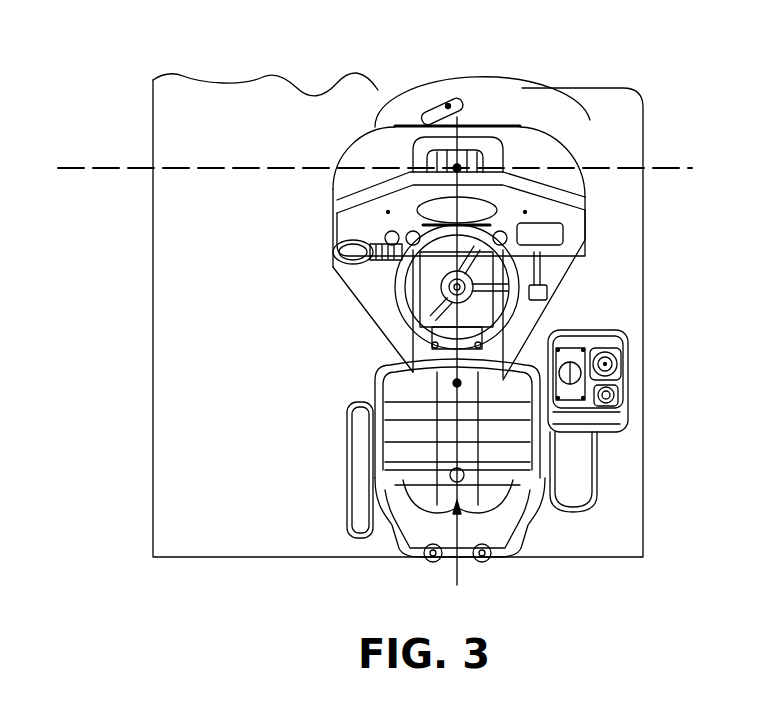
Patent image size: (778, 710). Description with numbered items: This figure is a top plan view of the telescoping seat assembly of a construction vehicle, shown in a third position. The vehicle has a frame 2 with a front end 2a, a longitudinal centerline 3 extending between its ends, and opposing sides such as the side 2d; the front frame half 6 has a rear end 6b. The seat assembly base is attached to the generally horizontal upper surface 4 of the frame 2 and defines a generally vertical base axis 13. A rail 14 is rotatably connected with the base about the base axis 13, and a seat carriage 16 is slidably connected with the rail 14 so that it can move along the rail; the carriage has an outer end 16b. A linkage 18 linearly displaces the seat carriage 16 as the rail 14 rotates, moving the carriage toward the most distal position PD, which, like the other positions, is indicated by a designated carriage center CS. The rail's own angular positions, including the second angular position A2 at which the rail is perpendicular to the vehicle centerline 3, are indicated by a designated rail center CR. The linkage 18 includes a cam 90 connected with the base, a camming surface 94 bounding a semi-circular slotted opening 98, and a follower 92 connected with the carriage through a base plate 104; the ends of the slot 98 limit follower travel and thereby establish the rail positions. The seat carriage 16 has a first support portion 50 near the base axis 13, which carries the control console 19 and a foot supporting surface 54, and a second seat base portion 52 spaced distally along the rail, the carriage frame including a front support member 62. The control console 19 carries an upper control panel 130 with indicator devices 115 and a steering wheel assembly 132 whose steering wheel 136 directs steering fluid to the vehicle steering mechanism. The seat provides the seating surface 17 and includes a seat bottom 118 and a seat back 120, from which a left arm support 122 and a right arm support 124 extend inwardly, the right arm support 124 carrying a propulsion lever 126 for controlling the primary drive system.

The frame 2 is at (128, 347).
The front end 2a is at (645, 373).
The side 2d is at (627, 557).
The longitudinal centerline 3 is at (122, 168).
The upper surface 4 is at (198, 403).
The front frame half 6 is at (180, 468).
The rear end 6b is at (153, 276).
The base axis 13 is at (500, 145).
The rail 14 is at (520, 126).
The seat carriage 16 is at (394, 341).
The outer end 16b is at (503, 552).
The seating surface 17 is at (500, 432).
The linkage 18 is at (433, 86).
The control console 19 is at (597, 200).
The support portion 50 is at (536, 112).
The seat base portion 52 is at (389, 535).
The foot supporting surface 54 is at (363, 167).
The front support member 62 is at (567, 166).
The cam 90 is at (453, 92).
The follower 92 is at (467, 301).
The camming surface 94 is at (427, 122).
The slotted opening 98 is at (458, 167).
The base plate 104 is at (467, 308).
The indicator devices 115 is at (400, 221).
The seat bottom 118 is at (402, 395).
The seat back 120 is at (463, 563).
The left arm support 122 is at (358, 450).
The right arm support 124 is at (590, 456).
The propulsion lever 126 is at (617, 348).
The control panel 130 is at (594, 220).
The steering wheel assembly 132 is at (392, 280).
The steering wheel 136 is at (560, 276).
The second angular position A2 is at (590, 258).
The rail center CR is at (382, 277).
The second carriage position PD is at (444, 381).
The carriage center CS is at (527, 358).